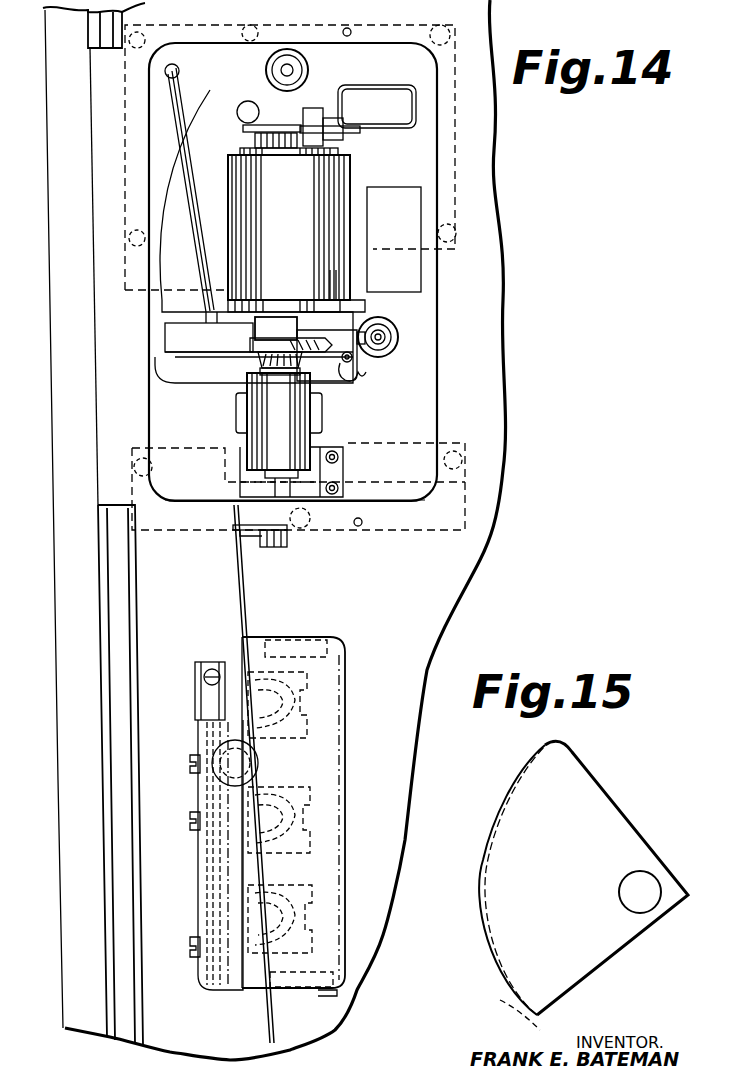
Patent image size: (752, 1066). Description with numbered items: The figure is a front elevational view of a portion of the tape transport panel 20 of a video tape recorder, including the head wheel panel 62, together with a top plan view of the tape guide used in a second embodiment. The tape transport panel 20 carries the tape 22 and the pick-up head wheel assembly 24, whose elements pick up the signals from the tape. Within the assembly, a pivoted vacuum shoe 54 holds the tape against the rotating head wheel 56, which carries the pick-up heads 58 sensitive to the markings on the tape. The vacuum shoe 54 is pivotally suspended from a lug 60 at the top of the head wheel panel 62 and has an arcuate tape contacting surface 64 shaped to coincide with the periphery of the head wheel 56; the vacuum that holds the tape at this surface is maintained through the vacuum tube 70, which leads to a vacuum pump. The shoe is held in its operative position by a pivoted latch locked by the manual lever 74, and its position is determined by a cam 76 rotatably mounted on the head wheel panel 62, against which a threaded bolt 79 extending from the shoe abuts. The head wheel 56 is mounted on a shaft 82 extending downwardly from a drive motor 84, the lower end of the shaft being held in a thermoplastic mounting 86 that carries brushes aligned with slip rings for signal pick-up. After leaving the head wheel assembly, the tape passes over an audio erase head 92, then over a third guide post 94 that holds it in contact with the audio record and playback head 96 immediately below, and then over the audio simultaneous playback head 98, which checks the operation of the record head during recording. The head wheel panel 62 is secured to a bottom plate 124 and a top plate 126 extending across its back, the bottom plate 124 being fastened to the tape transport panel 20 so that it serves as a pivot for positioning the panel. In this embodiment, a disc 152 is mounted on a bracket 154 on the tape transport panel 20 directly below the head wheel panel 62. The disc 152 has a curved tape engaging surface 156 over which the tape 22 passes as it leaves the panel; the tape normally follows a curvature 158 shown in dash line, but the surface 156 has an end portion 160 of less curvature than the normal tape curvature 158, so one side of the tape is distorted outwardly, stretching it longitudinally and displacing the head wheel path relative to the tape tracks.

In FIG. 14, the tape transport panel 20 is at (505, 365).
In FIG. 14, the tape 22 is at (242, 605).
In FIG. 14, the pick-up head wheel assembly 24 is at (408, 376).
In FIG. 14, the vacuum shoe 54 is at (175, 368).
In FIG. 14, the head wheel 56 is at (312, 352).
In FIG. 14, the pick-up heads 58 is at (276, 328).
In FIG. 14, the lug 60 is at (281, 124).
In FIG. 14, the head wheel panel 62 is at (423, 140).
In FIG. 14, the tape contacting surface 64 is at (260, 345).
In FIG. 14, the vacuum tube 70 is at (202, 260).
In FIG. 14, the manual lever 74 is at (365, 306).
In FIG. 14, the cam 76 is at (393, 328).
In FIG. 14, the threaded bolt 79 is at (345, 357).
In FIG. 14, the shaft 82 is at (290, 382).
In FIG. 14, the drive motor 84 is at (296, 226).
In FIG. 14, the thermoplastic mounting 86 is at (318, 441).
In FIG. 14, the audio erase head 92 is at (243, 700).
In FIG. 14, the third guide post 94 is at (258, 766).
In FIG. 14, the audio record and playback head 96 is at (247, 812).
In FIG. 14, the audio simultaneous playback head 98 is at (246, 915).
In FIG. 14, the bottom plate 124 is at (420, 517).
In FIG. 14, the top plate 126 is at (447, 70).
In FIG. 14, the disc 152 is at (262, 538).
In FIG. 15, the disc 152 is at (595, 805).
In FIG. 14, the bracket 154 is at (288, 545).
In FIG. 14, the tape engaging surface 156 is at (238, 520).
In FIG. 15, the tape engaging surface 156 is at (490, 848).
In FIG. 15, the normal tape curvature 158 is at (505, 972).
In FIG. 15, the end portion 160 is at (505, 993).